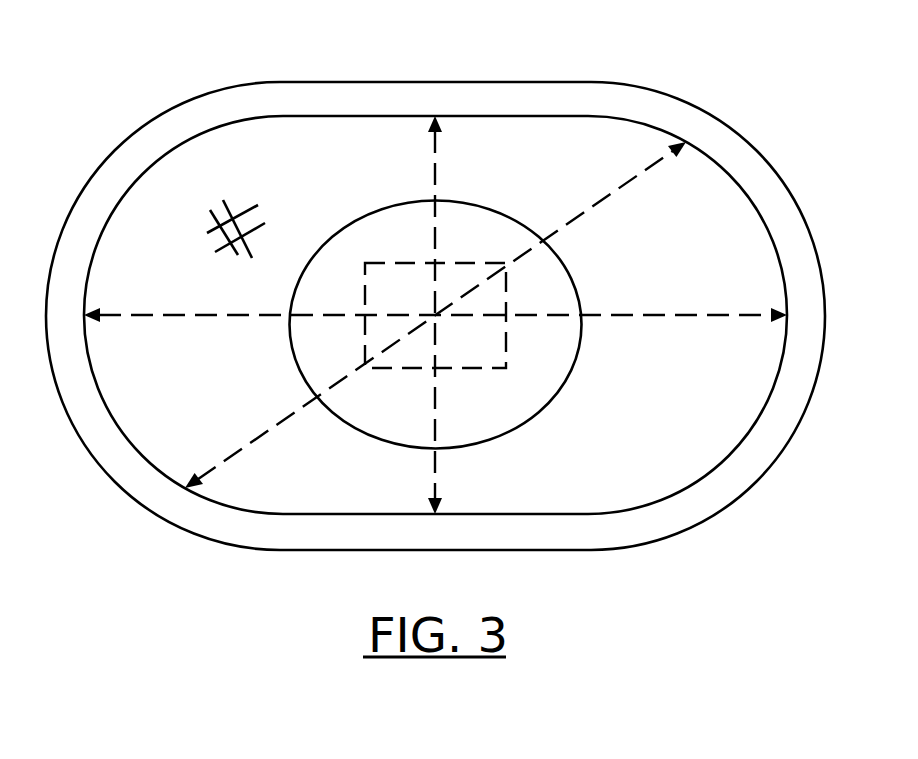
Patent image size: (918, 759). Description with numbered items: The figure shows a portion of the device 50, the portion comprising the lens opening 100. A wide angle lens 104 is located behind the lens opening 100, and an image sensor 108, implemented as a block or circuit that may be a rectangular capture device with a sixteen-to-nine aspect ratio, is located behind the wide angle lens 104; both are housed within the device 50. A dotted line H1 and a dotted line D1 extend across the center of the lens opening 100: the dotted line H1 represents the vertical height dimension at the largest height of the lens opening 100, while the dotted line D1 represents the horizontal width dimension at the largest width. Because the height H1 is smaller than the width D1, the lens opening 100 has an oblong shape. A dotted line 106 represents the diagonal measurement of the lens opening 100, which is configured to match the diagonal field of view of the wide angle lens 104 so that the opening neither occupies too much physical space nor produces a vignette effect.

The device 50 is at (272, 82).
The lens opening 100 is at (551, 116).
The wide angle lens 104 is at (477, 205).
The dotted line 106 is at (277, 432).
The image sensor 108 is at (418, 263).
The dotted line H1 is at (435, 192).
The dotted line D1 is at (668, 317).